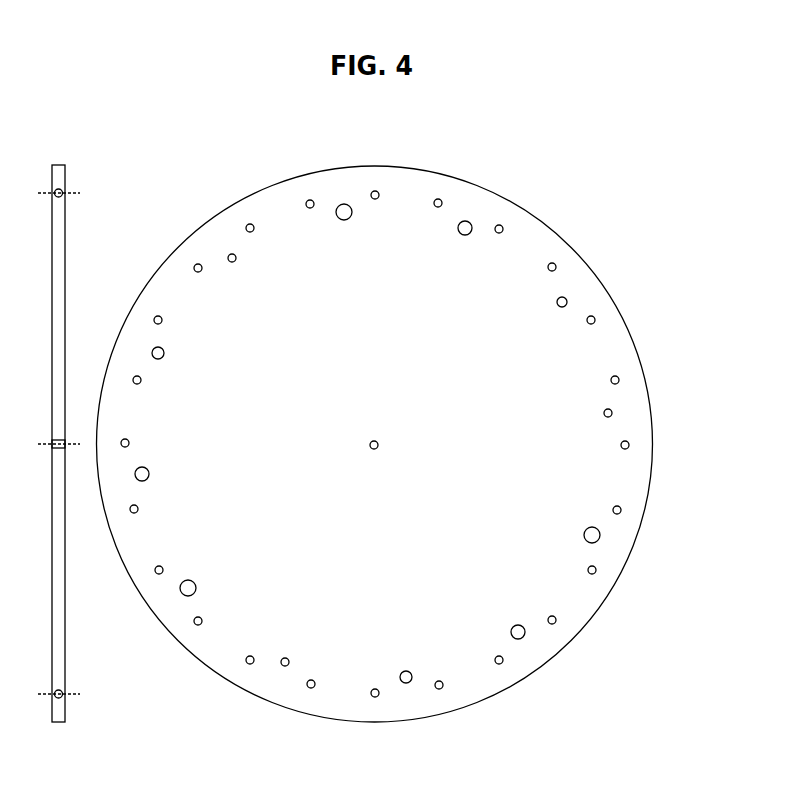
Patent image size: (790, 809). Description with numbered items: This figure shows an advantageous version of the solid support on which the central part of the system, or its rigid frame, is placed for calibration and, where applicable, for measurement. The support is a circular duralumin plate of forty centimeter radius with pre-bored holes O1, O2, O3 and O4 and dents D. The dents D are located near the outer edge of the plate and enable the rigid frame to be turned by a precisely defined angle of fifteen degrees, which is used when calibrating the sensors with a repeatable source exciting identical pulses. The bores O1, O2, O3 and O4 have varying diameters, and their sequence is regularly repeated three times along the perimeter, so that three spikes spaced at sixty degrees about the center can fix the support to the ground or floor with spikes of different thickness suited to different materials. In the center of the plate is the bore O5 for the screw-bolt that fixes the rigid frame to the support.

The dents D is at (306, 200).
The pre-bored hole O1 is at (346, 204).
The pre-bored hole O2 is at (470, 223).
The pre-bored hole O3 is at (567, 300).
The pre-bored hole O4 is at (612, 414).
The central bore O5 is at (377, 448).